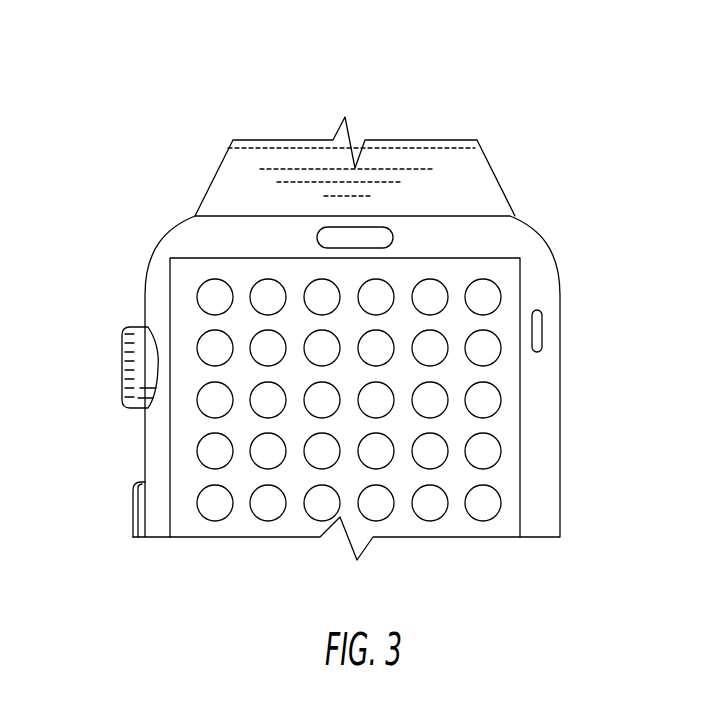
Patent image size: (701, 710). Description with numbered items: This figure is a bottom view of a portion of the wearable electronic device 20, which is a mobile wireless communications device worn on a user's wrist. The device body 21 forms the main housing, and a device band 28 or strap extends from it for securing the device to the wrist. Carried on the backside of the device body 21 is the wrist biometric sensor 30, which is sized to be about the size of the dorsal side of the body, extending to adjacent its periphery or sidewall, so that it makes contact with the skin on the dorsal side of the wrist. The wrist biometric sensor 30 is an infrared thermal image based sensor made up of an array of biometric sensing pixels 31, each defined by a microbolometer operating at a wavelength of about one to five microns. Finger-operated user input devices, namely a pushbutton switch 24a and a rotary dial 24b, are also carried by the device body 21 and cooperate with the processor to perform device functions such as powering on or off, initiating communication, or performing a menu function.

The wearable electronic device 20 is at (252, 76).
The device body 21 is at (530, 463).
The device band 28 is at (230, 170).
The wrist biometric sensor 30 is at (200, 240).
The biometric sensing pixels 31 is at (425, 293).
The pushbutton switch 24a is at (132, 505).
The rotary dial 24b is at (122, 368).